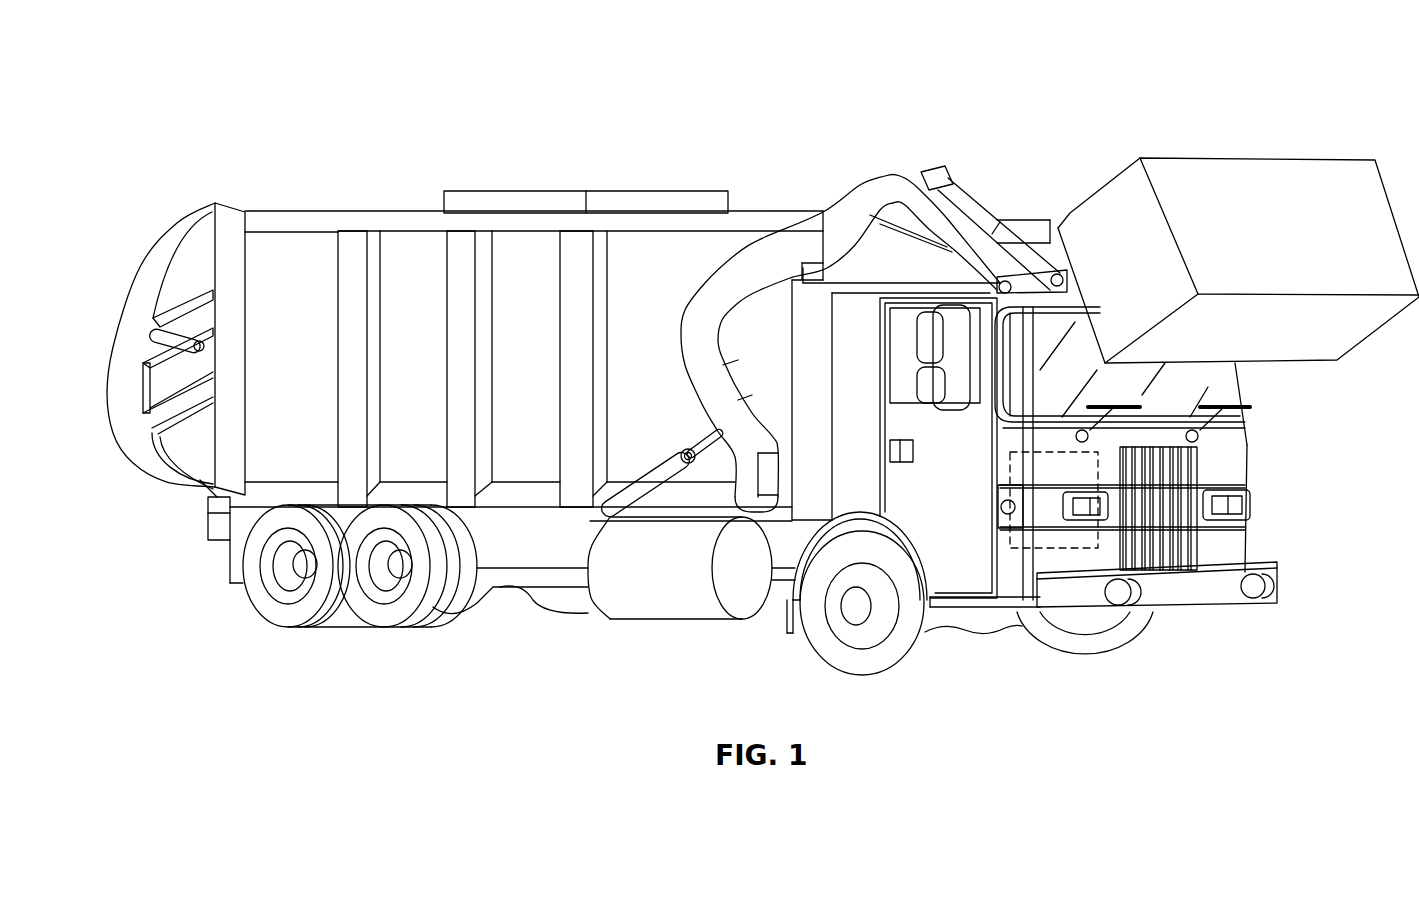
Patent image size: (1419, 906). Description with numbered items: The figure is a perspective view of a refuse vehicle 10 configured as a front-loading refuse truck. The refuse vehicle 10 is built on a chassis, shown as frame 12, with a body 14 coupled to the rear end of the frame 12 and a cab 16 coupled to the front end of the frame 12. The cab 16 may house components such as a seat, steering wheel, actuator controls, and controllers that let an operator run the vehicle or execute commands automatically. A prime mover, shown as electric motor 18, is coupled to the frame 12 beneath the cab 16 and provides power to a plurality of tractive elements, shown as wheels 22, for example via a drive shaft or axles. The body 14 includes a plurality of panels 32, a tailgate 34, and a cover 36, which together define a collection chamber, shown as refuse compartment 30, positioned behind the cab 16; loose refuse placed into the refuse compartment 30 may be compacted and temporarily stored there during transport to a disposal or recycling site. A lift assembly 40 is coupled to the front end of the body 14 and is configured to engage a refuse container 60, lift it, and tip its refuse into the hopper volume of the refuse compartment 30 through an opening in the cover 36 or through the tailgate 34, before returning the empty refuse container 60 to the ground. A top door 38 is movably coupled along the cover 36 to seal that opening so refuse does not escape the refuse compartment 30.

The refuse vehicle 10 is at (185, 88).
The frame 12 is at (567, 568).
The body 14 is at (417, 220).
The cab 16 is at (1012, 597).
The electric motor 18 is at (1048, 548).
The wheels 22 is at (862, 666).
The refuse compartment 30 is at (790, 187).
The panels 32 is at (277, 238).
The tailgate 34 is at (172, 257).
The cover 36 is at (357, 208).
The top door 38 is at (507, 193).
The lift assembly 40 is at (895, 143).
The refuse container 60 is at (1287, 167).